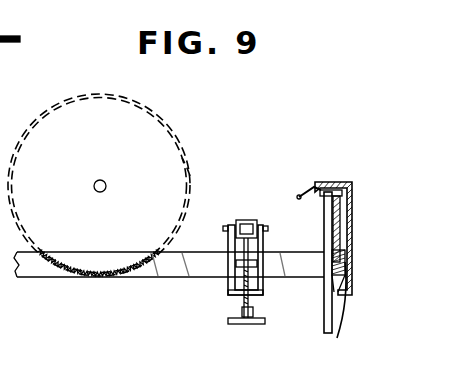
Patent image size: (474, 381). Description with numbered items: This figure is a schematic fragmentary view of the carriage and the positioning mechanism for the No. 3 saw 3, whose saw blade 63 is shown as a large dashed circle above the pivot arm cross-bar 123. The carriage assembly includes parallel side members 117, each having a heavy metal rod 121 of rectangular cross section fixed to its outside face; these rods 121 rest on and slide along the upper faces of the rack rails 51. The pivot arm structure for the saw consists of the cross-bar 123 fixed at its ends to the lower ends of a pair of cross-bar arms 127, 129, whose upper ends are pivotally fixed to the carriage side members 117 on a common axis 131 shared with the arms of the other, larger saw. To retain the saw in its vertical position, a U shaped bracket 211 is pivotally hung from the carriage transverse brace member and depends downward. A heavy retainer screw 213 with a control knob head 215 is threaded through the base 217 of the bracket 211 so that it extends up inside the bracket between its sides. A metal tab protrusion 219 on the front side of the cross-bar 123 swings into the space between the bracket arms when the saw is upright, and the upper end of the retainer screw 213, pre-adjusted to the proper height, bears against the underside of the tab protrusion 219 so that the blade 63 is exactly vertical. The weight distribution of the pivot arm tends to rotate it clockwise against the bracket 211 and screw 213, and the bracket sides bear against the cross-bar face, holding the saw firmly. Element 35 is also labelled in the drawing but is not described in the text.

The No. 3 saw blade 63 is at (141, 115).
The No. 3 saw 3 is at (193, 170).
The cross-bar 123 is at (70, 278).
The U shaped bracket 211 is at (229, 284).
The tab protrusion 219 is at (247, 262).
The retainer screw 213 is at (241, 303).
The base of the bracket 217 is at (259, 295).
The control knob head 215 is at (240, 325).
The cross-bar arm 129 is at (324, 300).
The cross-bar arm 127 is at (328, 207).
The common axis 131 is at (311, 191).
The side members 117 is at (334, 222).
The rod 121 is at (336, 233).
The bracket 35 is at (340, 183).
The rack rails 51 is at (346, 310).